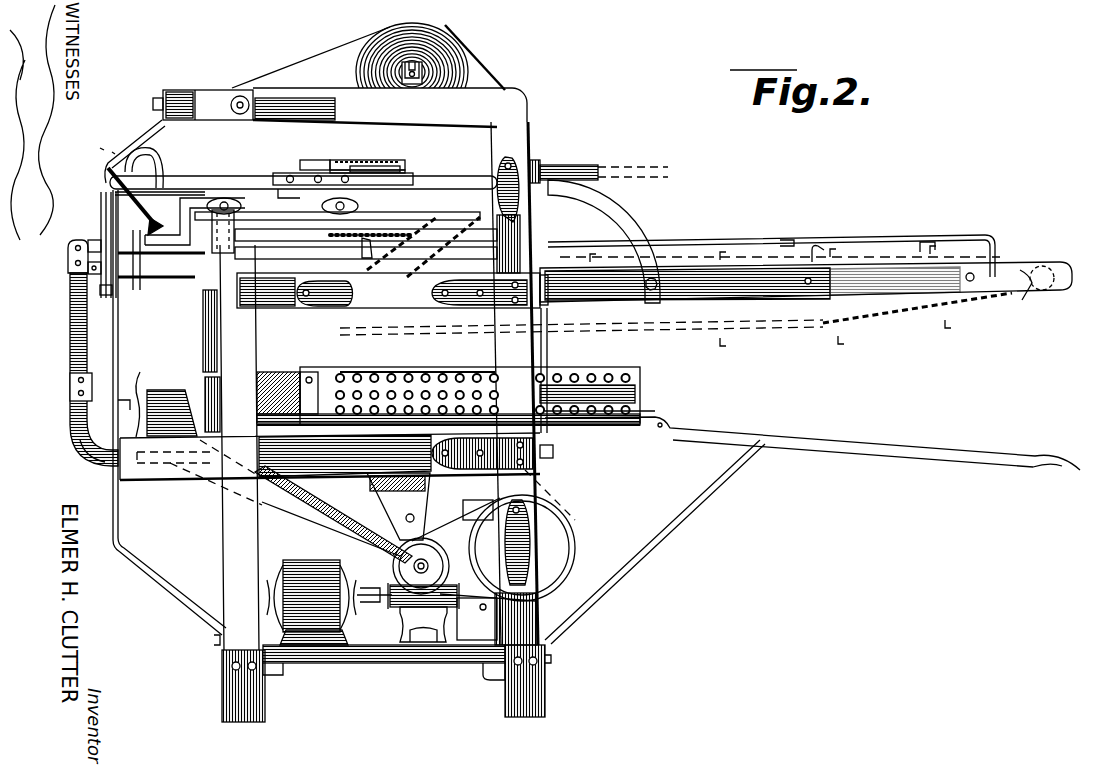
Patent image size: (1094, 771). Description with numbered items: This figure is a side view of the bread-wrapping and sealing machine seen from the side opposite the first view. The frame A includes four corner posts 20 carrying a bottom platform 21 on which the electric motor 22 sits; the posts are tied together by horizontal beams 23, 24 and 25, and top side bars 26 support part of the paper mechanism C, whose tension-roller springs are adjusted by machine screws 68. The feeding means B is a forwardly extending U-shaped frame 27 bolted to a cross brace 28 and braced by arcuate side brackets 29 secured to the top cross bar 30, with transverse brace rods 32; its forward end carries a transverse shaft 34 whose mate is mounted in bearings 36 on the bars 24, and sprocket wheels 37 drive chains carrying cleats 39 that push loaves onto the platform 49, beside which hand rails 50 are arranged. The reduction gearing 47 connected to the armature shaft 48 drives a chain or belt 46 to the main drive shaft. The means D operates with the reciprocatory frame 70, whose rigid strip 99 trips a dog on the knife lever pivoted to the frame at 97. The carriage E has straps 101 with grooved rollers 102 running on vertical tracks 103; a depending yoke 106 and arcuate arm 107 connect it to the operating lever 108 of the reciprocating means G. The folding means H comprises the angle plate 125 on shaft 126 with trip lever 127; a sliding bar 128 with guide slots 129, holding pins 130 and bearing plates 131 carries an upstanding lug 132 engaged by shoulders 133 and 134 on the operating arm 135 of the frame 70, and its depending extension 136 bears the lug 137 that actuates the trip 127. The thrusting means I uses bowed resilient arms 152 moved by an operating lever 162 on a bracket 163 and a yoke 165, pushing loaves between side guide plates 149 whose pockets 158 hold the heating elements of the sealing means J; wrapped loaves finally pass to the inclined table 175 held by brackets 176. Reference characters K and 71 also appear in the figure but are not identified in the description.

The frame A is at (524, 132).
The bread feeding means B is at (722, 260).
The paper guiding and cutting mechanism C is at (392, 32).
The paper-cutting setting means D is at (368, 262).
The carriage E is at (98, 272).
The carriage reciprocating means G is at (108, 456).
The paper folding means H is at (170, 392).
The bread thrusting means I is at (142, 376).
The sealing means J is at (278, 388).
The rail K is at (203, 312).
The corner posts 20 is at (233, 636).
The bottom platform 21 is at (392, 650).
The prime mover 22 is at (322, 640).
The horizontally extending beams 23 is at (358, 452).
The horizontally extending beams 24 is at (388, 290).
The horizontally extending beams 25 is at (366, 222).
The top side bars 26 is at (318, 100).
The U-shaped metal frame 27 is at (878, 278).
The cross brace 28 is at (542, 303).
The arcuate side brackets 29 is at (640, 224).
The top cross bar 30 is at (541, 165).
The transverse brace rods 32 is at (818, 260).
The transverse shaft 34 is at (1047, 268).
The bearings 36 is at (305, 302).
The sprocket wheels 37 is at (1022, 272).
The flights or cleats 39 is at (925, 247).
The sprocket chain or belt 46 is at (540, 582).
The reduction gearing 47 is at (437, 643).
The armature shaft 48 is at (368, 575).
The platform 49 is at (246, 308).
The hand rails 50 is at (787, 238).
The machine screws 68 is at (163, 103).
The reciprocatory frame 70 is at (405, 212).
The rod 71 is at (562, 166).
The pivot 97 is at (500, 236).
The rigid strip 99 is at (358, 206).
The straps 101 is at (100, 226).
The grooved rollers 102 is at (103, 292).
The vertically disposed tracks 103 is at (121, 522).
The depending yoke 106 is at (74, 372).
The arcuate arm 107 is at (86, 446).
The operating lever 108 is at (298, 498).
The angle-shaped plate 125 is at (178, 176).
The shaft 126 is at (108, 184).
The trip lever 127 is at (133, 158).
The operating bar 128 is at (325, 172).
The guide slots 129 is at (352, 172).
The holding pins 130 is at (370, 160).
The heads or bearing plates 131 is at (369, 155).
The upstanding lug 132 is at (284, 172).
The shoulder 133 is at (156, 166).
The shoulder 134 is at (302, 168).
The operating arm 135 is at (88, 153).
The depending angular extension 136 is at (172, 226).
The upstanding lug 137 is at (135, 290).
The side guide plates 149 is at (440, 360).
The bowed resilient arms 152 is at (130, 403).
The sheet metal pockets 158 is at (320, 374).
The operating lever 162 is at (398, 497).
The bracket 163 is at (463, 508).
The yoke 165 is at (462, 500).
The inclined table 175 is at (812, 440).
The brackets 176 is at (690, 517).